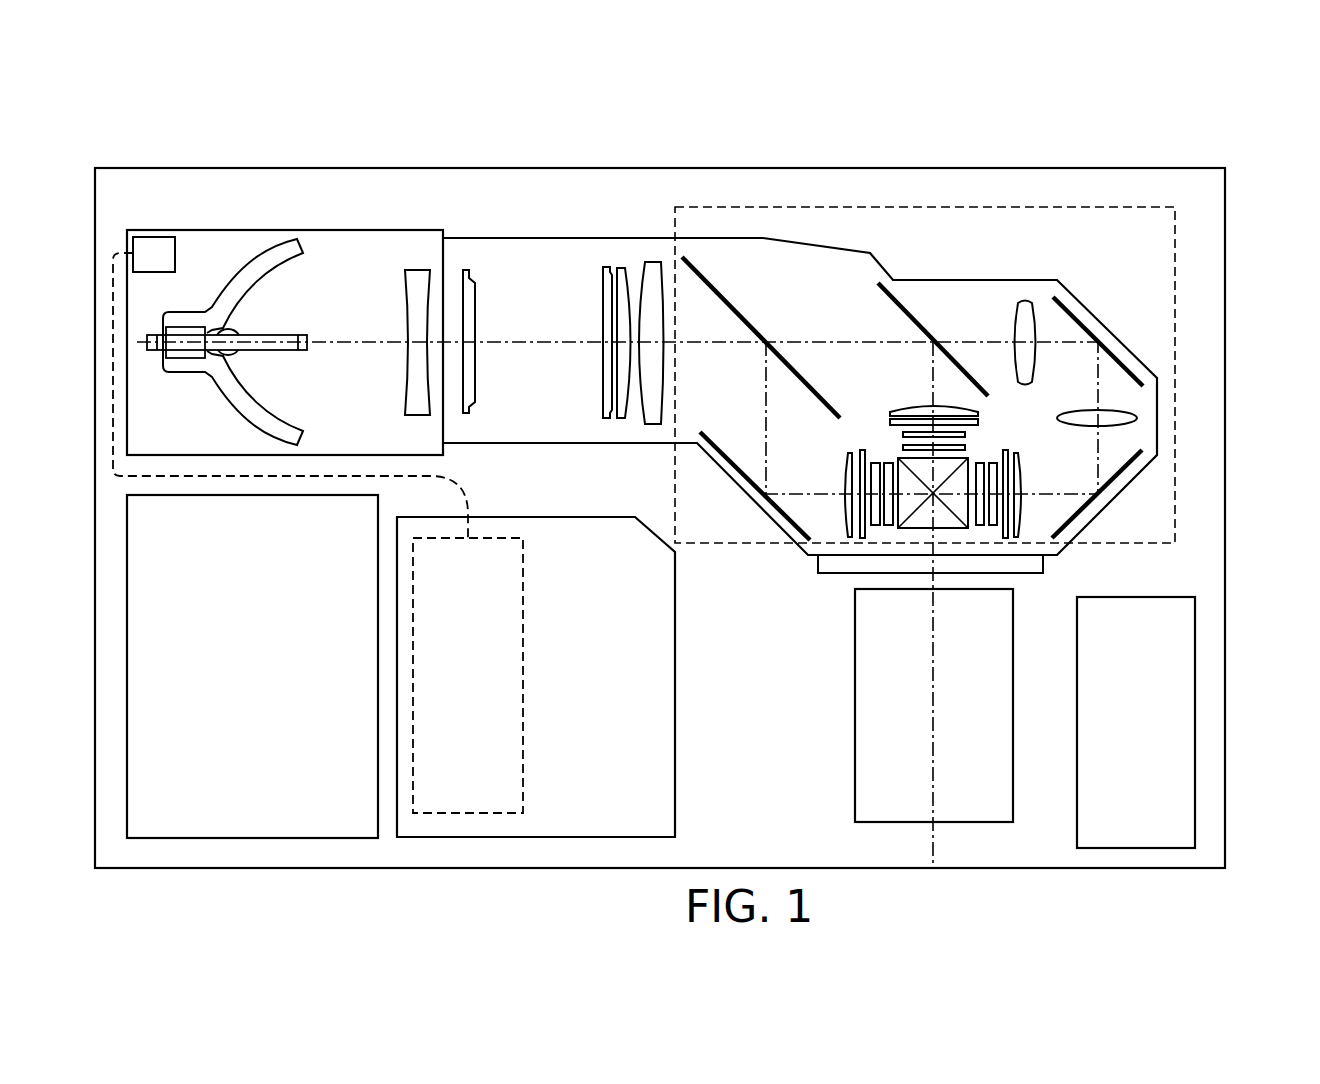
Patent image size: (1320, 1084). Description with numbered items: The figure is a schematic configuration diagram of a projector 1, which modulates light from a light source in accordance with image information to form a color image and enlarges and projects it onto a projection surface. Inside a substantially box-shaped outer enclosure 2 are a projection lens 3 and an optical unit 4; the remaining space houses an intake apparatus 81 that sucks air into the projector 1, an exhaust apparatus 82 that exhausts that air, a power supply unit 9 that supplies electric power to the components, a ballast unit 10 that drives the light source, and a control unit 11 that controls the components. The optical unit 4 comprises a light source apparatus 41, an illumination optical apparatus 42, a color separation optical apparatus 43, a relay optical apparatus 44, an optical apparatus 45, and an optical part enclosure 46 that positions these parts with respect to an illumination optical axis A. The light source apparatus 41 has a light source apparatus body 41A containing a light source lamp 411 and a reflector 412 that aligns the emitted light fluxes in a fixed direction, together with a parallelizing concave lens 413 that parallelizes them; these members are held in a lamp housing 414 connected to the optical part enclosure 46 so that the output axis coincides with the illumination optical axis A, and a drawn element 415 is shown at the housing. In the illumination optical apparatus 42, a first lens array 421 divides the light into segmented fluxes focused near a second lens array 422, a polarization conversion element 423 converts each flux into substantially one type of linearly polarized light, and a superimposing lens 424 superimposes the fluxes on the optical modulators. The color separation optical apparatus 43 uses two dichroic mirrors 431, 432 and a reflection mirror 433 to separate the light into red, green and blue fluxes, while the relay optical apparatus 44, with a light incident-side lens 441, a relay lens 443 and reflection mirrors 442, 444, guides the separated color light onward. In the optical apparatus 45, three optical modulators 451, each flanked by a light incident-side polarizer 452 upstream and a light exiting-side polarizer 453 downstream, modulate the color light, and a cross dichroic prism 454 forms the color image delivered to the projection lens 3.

The projector 1 is at (1003, 120).
The outer enclosure 2 is at (1226, 283).
The projection lens 3 is at (1013, 783).
The optical unit 4 is at (630, 461).
The power supply unit 9 is at (543, 837).
The ballast unit 10 is at (468, 813).
The control unit 11 is at (1177, 448).
The light source apparatus 41 is at (438, 104).
The light source apparatus body 41A is at (317, 141).
The light source lamp 411 is at (282, 331).
The reflector 412 is at (278, 253).
The parallelizing concave lens 413 is at (421, 270).
The lamp housing 414 is at (363, 230).
The light source driving circuit 415 is at (152, 237).
The illumination optical apparatus 42 is at (615, 198).
The first lens array 421 is at (476, 307).
The second lens array 422 is at (606, 267).
The polarization conversion element 423 is at (626, 268).
The superimposing lens 424 is at (657, 295).
The color separation optical apparatus 43 is at (824, 258).
The dichroic mirror 431 is at (714, 284).
The dichroic mirror 432 is at (889, 293).
The reflection mirror 433 is at (723, 443).
The relay optical apparatus 44 is at (1110, 298).
The light incident-side lens 441 is at (1025, 302).
The reflection mirror 442 is at (1120, 362).
The relay lens 443 is at (1130, 414).
The reflection mirror 444 is at (1085, 512).
The optical apparatus 45 is at (1032, 411).
The optical modulator 451 is at (968, 435).
The light incident-side polarizer 452 is at (889, 418).
The light exiting-side polarizer 453 is at (967, 448).
The cross dichroic prism 454 is at (942, 530).
The optical part enclosure 46 is at (953, 280).
The intake apparatus 81 is at (1195, 787).
The exhaust apparatus 82 is at (253, 838).
The illumination optical axis A is at (520, 344).